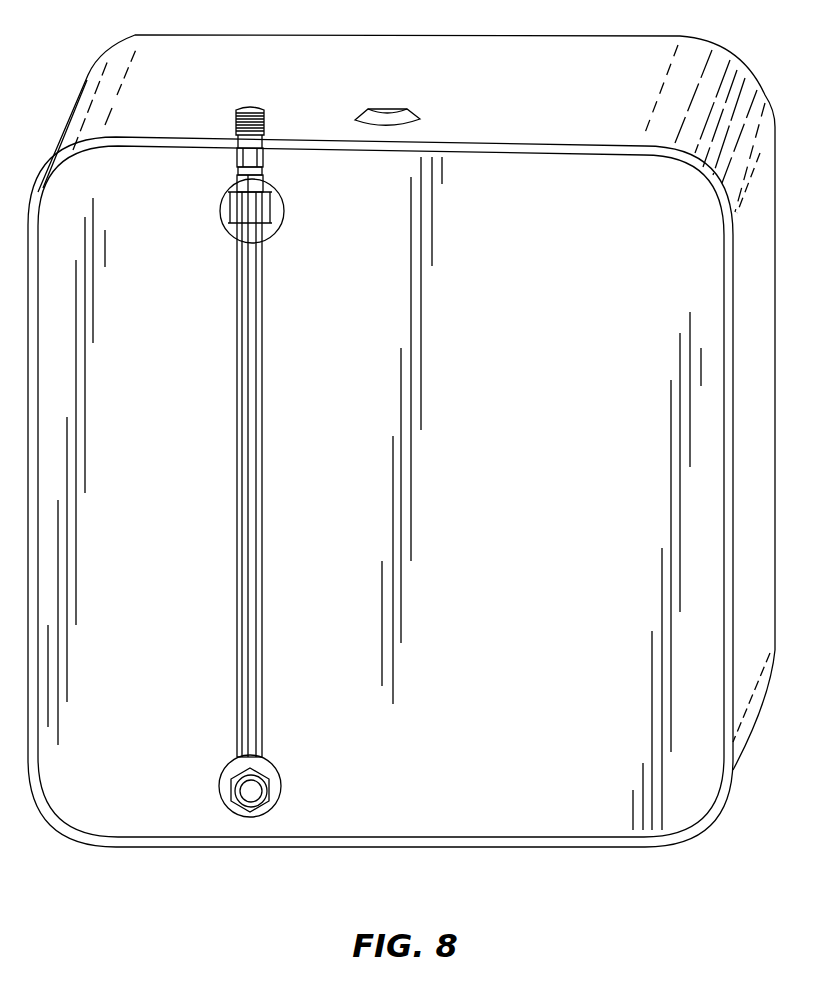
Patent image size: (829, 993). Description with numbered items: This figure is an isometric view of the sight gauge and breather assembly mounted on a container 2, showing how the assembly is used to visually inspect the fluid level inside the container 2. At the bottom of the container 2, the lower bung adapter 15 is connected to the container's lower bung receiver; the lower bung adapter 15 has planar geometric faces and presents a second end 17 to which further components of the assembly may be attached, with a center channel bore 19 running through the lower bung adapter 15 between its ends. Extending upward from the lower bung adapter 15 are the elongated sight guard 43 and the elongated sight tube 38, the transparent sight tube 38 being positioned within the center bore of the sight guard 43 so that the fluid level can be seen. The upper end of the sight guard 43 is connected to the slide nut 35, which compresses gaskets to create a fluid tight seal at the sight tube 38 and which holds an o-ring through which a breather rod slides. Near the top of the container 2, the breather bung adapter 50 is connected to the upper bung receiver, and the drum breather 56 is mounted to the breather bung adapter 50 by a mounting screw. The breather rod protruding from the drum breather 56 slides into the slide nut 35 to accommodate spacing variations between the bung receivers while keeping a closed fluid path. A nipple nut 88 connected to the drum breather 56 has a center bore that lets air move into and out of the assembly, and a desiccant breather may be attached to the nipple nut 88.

The container 2 is at (456, 812).
The lower bung adapter 15 is at (232, 763).
The second end 17 is at (227, 797).
The center channel bore 19 is at (262, 808).
The slide nut 35 is at (238, 180).
The sight tube 38 is at (243, 472).
The sight guard 43 is at (243, 578).
The breather bung adapter 50 is at (232, 212).
The drum breather 56 is at (240, 158).
The nipple nut 88 is at (233, 132).